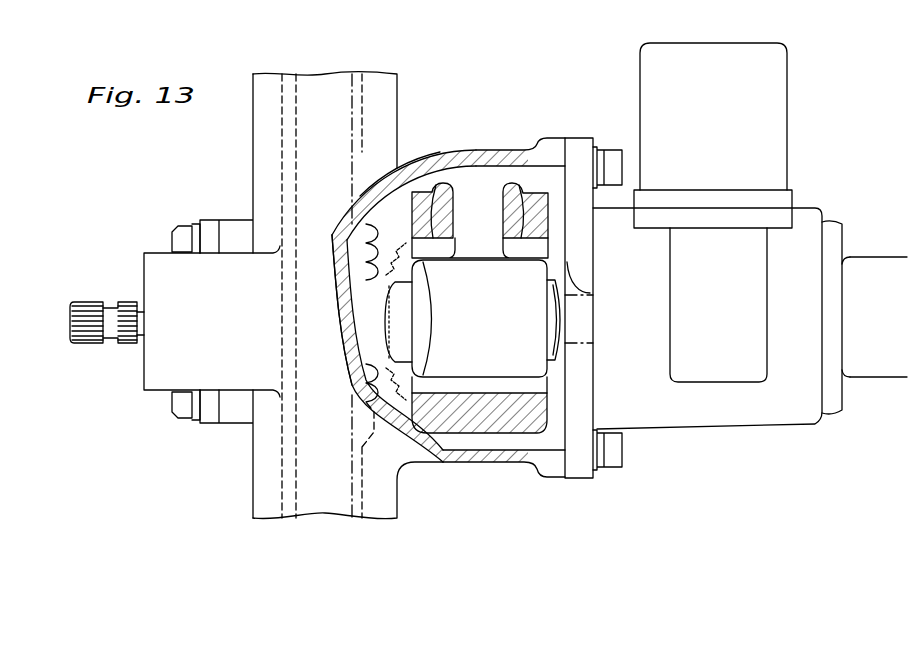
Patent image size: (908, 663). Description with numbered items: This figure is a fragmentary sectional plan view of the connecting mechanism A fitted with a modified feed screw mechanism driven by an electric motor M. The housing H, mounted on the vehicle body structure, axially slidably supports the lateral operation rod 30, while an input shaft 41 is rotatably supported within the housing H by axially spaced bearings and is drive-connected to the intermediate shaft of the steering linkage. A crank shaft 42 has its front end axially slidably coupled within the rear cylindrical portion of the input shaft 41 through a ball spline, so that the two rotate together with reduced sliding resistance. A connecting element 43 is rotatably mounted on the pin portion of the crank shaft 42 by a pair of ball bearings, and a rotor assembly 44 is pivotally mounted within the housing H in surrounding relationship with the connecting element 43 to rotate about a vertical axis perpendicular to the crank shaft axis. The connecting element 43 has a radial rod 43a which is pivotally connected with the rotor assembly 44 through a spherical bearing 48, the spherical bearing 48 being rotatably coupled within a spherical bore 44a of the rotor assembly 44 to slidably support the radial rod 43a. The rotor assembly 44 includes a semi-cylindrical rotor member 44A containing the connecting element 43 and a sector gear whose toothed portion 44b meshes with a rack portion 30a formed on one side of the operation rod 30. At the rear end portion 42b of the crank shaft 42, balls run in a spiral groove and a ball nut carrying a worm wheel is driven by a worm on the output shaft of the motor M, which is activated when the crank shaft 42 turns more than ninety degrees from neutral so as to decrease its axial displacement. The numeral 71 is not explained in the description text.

The operation rod 30 is at (357, 502).
The rack portion 30a is at (341, 377).
The input shaft 41 is at (110, 337).
The crank shaft 42 is at (365, 317).
The rear end portion of crank shaft 42b is at (578, 308).
The connecting element 43 is at (567, 397).
The radial rod 43a is at (472, 195).
The rotor assembly 44 is at (524, 464).
The spherical bore 44a is at (446, 197).
The toothed portion 44b is at (386, 385).
The semi-cylindrical rotor member 44A is at (455, 420).
The spherical bearing 48 is at (512, 188).
The hidden bore 71 is at (320, 498).
The housing H is at (259, 452).
The electric motor M is at (774, 110).
The connecting mechanism A is at (557, 228).